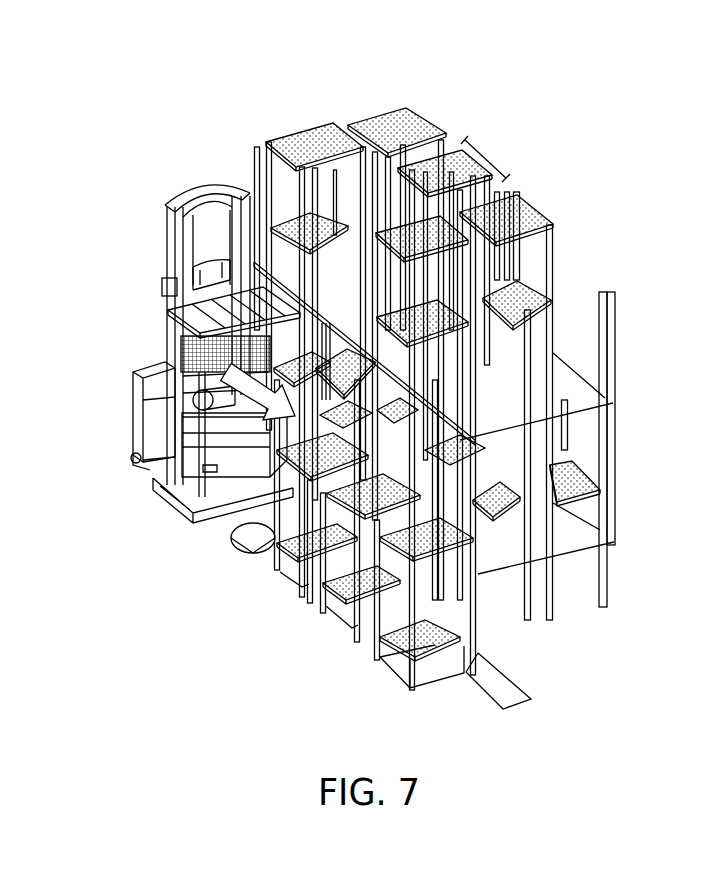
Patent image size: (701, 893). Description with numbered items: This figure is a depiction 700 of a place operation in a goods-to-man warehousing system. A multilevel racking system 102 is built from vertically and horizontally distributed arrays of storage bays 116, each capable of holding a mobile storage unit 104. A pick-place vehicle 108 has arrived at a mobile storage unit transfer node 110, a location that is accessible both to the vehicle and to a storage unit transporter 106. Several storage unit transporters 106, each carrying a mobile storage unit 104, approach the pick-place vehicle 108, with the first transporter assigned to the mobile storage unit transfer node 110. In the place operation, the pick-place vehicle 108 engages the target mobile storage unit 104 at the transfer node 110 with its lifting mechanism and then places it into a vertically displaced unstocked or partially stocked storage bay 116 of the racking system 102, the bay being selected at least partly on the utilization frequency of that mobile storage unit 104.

The depiction of a place operation 700 is at (100, 74).
The multilevel racking system 102 is at (612, 420).
The mobile storage unit 104 is at (517, 217).
The storage unit transporter 106 is at (298, 573).
The pick-place vehicle 108 is at (153, 370).
The mobile storage unit transfer node 110 is at (248, 542).
The storage bay 116 is at (491, 158).